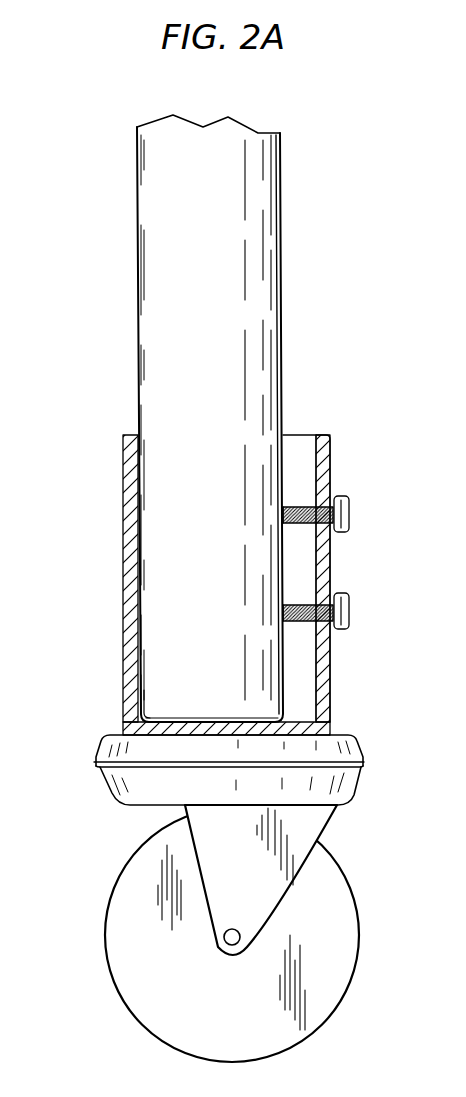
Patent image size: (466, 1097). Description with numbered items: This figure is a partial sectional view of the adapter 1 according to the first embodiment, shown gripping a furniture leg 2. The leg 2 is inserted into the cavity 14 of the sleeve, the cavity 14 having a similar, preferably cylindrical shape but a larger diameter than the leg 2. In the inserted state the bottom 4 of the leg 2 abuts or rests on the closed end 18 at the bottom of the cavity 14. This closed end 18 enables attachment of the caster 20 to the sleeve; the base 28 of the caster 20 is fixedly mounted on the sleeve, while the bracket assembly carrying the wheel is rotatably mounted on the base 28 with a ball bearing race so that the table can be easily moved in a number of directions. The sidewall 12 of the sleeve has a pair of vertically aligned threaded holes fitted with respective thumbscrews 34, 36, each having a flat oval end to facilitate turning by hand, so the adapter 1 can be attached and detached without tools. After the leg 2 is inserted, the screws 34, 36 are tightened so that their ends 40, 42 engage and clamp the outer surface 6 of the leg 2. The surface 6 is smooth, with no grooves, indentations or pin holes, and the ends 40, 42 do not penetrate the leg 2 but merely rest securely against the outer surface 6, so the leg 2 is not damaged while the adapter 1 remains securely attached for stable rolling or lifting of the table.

The adapter 1 is at (102, 549).
The leg 2 is at (256, 213).
The bottom of the leg 4 is at (152, 710).
The outer surface of the leg 6 is at (280, 293).
The sidewall 12 is at (330, 452).
The cavity 14 is at (298, 450).
The closed end 18 is at (178, 734).
The caster 20 is at (78, 828).
The base 28 is at (365, 757).
The thumbscrew 34 is at (350, 513).
The thumbscrew 36 is at (350, 610).
The end of the screw 40 is at (283, 527).
The end of the screw 42 is at (283, 624).